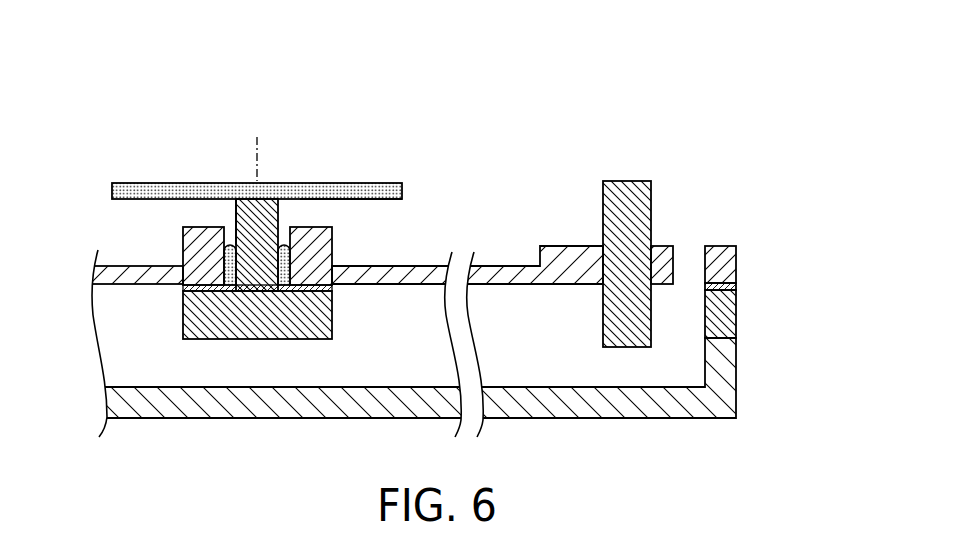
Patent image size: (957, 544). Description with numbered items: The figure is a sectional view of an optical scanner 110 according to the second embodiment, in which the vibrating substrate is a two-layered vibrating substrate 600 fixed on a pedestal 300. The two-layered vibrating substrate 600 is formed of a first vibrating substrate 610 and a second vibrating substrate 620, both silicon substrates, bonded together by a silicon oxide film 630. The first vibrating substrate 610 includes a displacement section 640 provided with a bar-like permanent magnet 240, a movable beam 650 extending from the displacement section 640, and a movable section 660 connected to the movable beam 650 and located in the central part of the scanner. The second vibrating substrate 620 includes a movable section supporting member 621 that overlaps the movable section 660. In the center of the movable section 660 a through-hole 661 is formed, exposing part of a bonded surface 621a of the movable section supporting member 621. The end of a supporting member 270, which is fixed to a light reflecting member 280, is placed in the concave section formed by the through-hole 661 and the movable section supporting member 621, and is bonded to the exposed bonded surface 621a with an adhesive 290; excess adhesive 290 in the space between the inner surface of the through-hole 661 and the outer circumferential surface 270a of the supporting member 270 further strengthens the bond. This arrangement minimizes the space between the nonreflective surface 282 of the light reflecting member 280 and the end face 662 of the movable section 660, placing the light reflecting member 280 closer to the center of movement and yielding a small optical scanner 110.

The optical scanner 110 is at (747, 60).
The light reflecting member 280 is at (140, 183).
The nonreflective surface 282 is at (362, 209).
The supporting member 270 is at (243, 203).
The outer circumferential surface 270a is at (226, 209).
The through-hole 661 is at (285, 243).
The end face 662 is at (322, 217).
The movable section 660 is at (196, 249).
The movable beam 650 is at (400, 280).
The permanent magnet 240 is at (633, 187).
The displacement section 640 is at (660, 251).
The two-layered vibrating substrate 600 is at (792, 287).
The first vibrating substrate 610 is at (726, 253).
The silicon oxide film 630 is at (726, 286).
The second vibrating substrate 620 is at (726, 315).
The pedestal 300 is at (726, 393).
The adhesive 290 is at (236, 288).
The movable section supporting member 621 is at (278, 320).
The bonded surface 621a is at (314, 274).